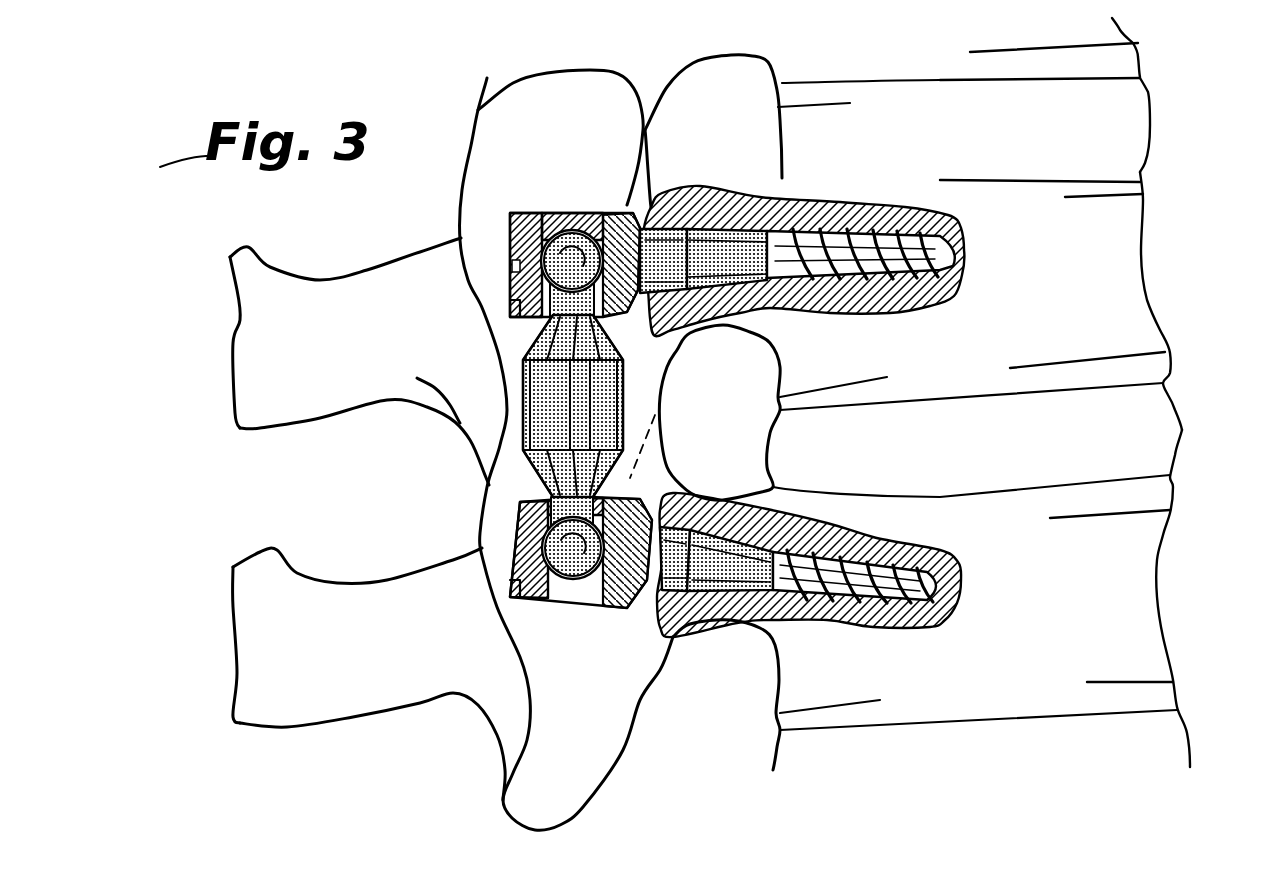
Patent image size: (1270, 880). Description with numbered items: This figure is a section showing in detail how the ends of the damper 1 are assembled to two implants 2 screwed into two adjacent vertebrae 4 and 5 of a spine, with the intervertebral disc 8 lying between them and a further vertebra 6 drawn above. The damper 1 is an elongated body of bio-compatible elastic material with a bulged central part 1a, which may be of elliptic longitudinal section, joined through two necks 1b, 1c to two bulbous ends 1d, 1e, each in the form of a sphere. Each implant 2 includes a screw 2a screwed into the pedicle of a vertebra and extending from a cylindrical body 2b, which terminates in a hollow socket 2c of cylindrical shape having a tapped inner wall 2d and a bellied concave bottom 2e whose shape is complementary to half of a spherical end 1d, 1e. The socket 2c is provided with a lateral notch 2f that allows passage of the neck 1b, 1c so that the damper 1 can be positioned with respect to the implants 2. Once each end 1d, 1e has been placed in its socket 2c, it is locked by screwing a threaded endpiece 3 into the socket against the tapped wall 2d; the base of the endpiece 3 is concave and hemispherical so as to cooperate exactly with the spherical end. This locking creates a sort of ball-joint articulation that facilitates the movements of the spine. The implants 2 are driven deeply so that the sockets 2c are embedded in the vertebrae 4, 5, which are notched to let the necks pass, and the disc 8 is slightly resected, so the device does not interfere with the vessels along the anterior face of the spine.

The damper 1 is at (556, 462).
The bulged central part 1a is at (628, 383).
The neck 1b is at (655, 352).
The neck 1c is at (602, 503).
The bulbous end 1d is at (585, 213).
The bulbous end 1e is at (577, 608).
The implant 2 is at (828, 417).
The screw 2a is at (905, 265).
The cylindrical body 2b is at (748, 265).
The hollow socket 2c is at (510, 212).
The tapped inner wall 2d is at (548, 213).
The concave bottom 2e is at (604, 636).
The lateral notch 2f is at (512, 322).
The threaded endpiece 3 is at (530, 445).
The vertebra 4 is at (1140, 597).
The vertebra 5 is at (1127, 273).
The uppermost vertebra 6 is at (1130, 60).
The intervertebral disc 8 is at (1130, 133).